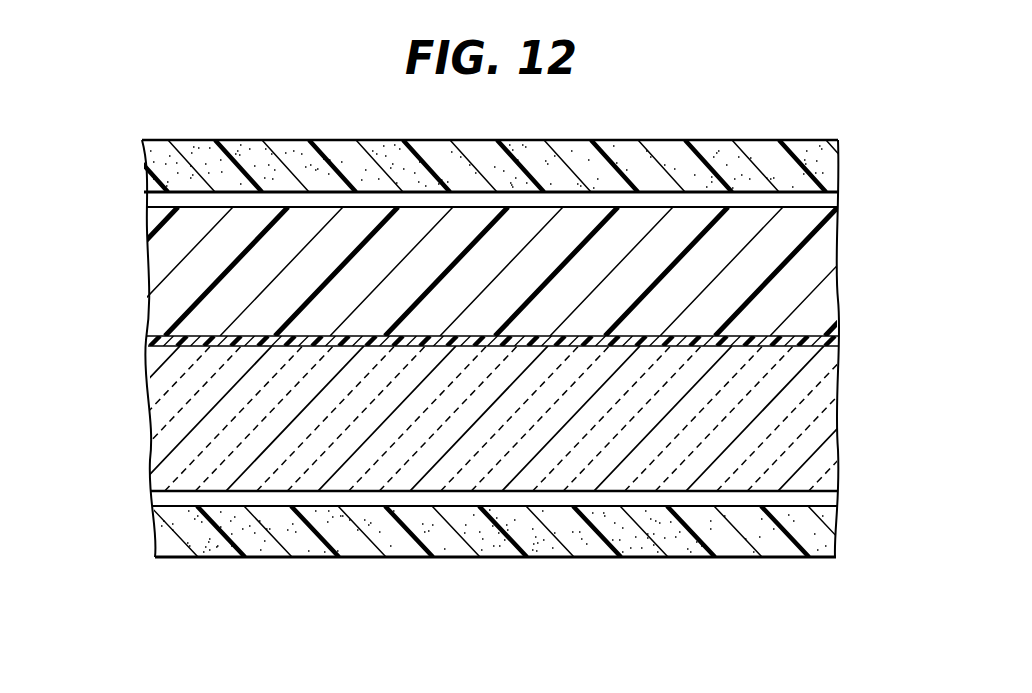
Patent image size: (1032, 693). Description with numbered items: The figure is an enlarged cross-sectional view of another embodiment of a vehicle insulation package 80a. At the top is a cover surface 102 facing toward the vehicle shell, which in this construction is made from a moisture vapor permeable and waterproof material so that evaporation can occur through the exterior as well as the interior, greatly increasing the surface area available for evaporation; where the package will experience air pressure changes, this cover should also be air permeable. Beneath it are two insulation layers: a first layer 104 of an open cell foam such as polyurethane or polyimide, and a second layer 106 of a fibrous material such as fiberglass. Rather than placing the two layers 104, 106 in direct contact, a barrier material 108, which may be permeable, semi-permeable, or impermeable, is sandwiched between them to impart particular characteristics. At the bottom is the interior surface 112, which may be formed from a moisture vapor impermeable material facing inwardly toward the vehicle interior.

The insulation package 80a is at (644, 124).
The cover surface 102 is at (480, 141).
The first layer 104 is at (855, 208).
The second layer 106 is at (855, 345).
The barrier material 108 is at (148, 338).
The interior surface 112 is at (606, 558).